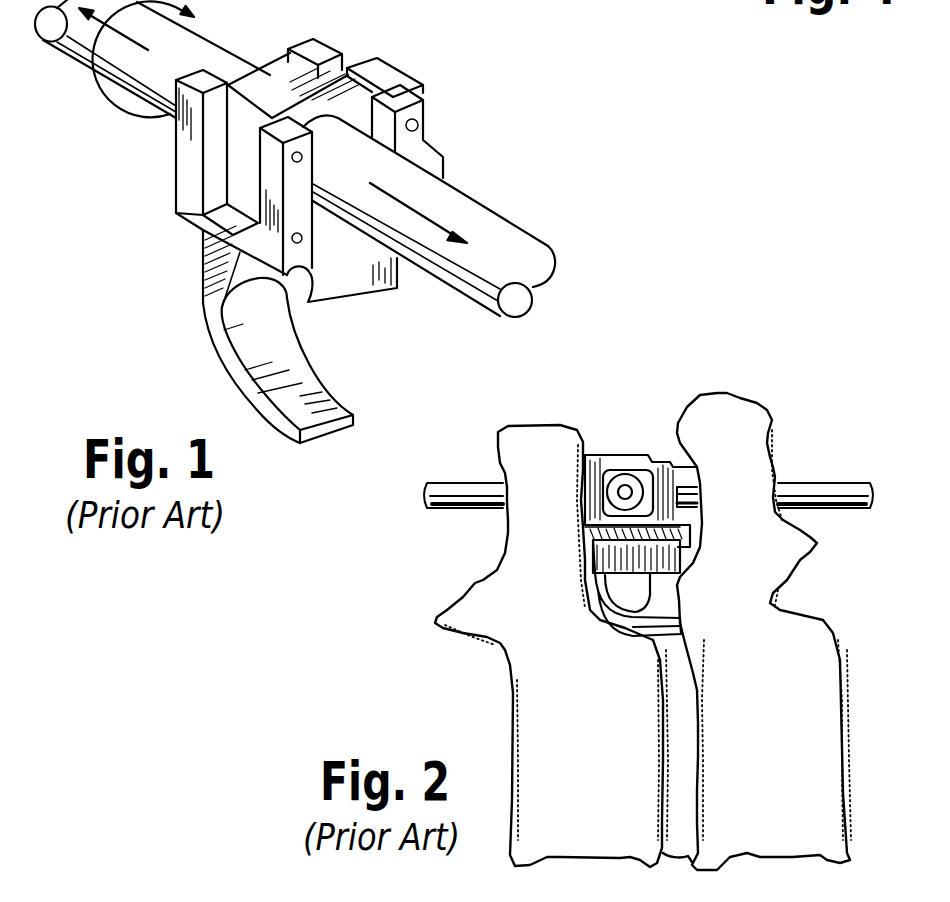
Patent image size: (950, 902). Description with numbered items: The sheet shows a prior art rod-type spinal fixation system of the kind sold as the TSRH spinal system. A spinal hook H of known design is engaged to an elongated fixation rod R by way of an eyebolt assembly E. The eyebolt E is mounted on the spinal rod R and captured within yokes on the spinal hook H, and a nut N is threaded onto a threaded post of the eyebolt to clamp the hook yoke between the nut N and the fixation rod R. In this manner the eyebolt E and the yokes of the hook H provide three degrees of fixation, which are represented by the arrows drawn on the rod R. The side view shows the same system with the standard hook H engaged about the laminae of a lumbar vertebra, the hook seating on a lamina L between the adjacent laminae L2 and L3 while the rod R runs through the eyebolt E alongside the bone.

In FIG. 1, the fixation rod R is at (463, 203).
In FIG. 2, the fixation rod R is at (810, 487).
In FIG. 1, the eyebolt assembly E is at (383, 72).
In FIG. 2, the eyebolt assembly E is at (628, 473).
In FIG. 1, the nut N is at (412, 84).
In FIG. 2, the nut N is at (607, 500).
In FIG. 1, the spinal hook H is at (213, 277).
In FIG. 2, the spinal hook H is at (607, 567).
In FIG. 2, the lamina L is at (640, 620).
In FIG. 2, the lamina of second vertebra L2 is at (733, 407).
In FIG. 2, the lamina of third vertebra L3 is at (533, 437).